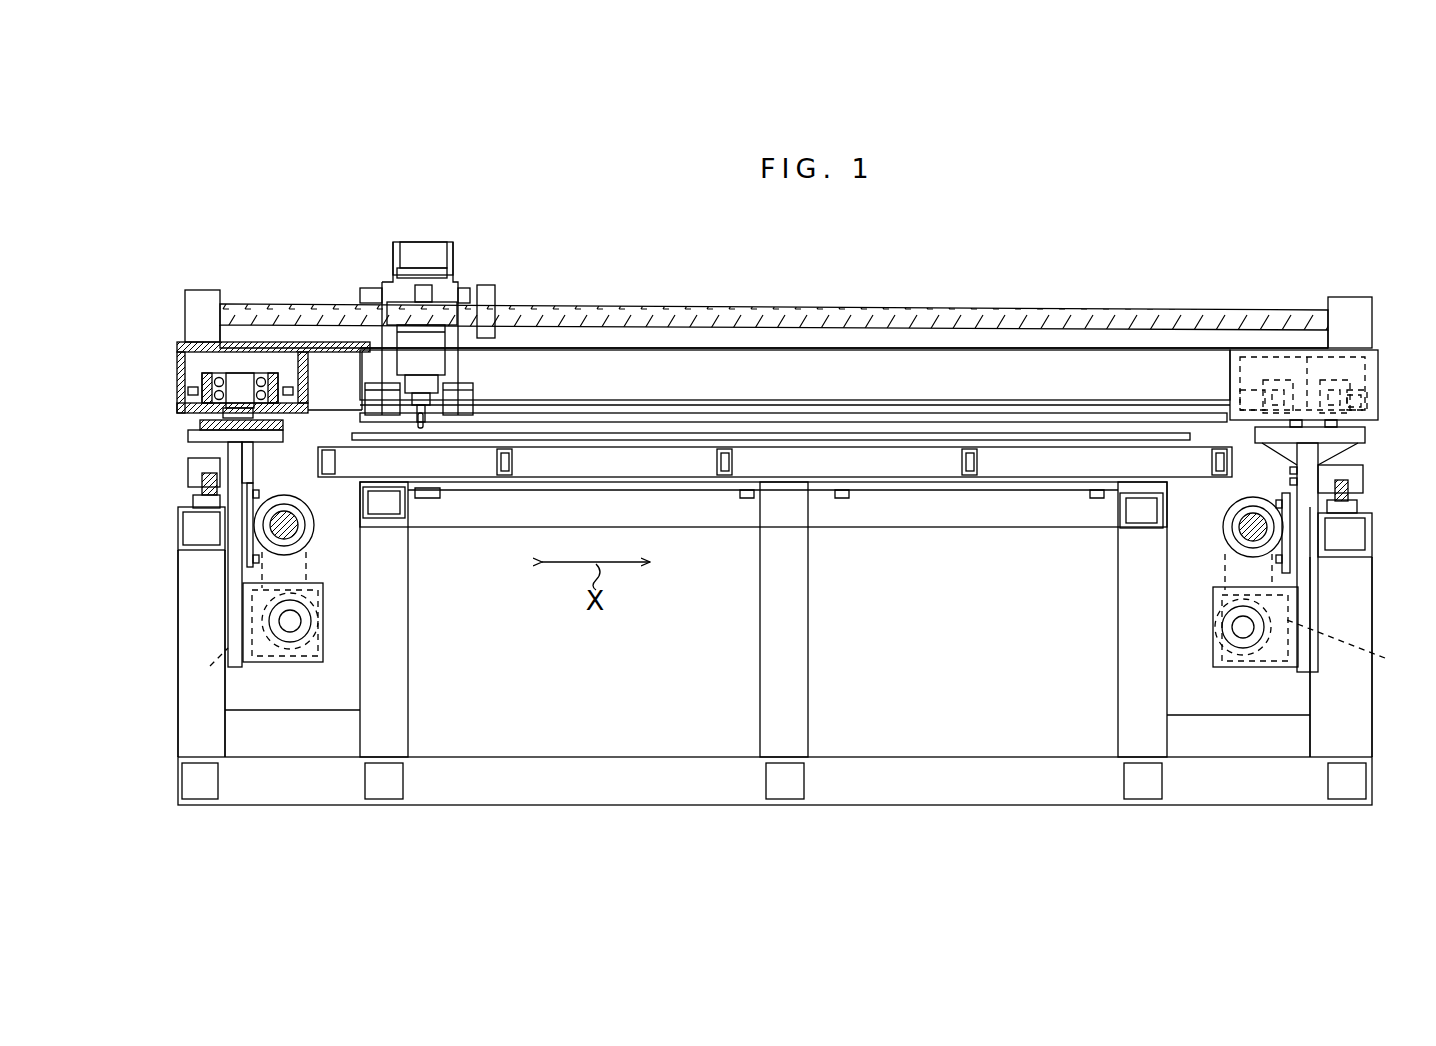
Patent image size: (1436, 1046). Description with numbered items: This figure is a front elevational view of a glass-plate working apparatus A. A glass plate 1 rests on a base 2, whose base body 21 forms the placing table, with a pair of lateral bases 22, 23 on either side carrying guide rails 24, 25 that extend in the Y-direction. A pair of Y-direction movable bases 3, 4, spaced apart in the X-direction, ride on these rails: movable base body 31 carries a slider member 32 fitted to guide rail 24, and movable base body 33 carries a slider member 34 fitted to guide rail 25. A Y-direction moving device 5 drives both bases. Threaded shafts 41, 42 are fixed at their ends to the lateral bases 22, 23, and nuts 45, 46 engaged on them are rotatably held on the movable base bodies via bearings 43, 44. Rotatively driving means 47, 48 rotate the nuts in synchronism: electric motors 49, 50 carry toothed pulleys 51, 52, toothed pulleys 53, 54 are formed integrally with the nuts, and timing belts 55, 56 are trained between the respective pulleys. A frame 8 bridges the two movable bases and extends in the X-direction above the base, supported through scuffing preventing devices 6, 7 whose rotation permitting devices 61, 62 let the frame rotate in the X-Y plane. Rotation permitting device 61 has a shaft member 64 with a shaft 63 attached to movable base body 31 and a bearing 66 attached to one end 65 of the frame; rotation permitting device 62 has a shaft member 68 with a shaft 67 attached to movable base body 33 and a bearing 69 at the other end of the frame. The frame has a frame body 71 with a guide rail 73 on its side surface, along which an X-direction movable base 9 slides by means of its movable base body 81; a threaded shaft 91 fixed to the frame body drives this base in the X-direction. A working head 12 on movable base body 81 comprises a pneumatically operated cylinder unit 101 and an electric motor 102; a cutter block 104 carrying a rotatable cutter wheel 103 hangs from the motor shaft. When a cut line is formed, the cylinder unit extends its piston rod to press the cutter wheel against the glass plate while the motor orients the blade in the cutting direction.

The glass plate 1 is at (925, 447).
The base 2 is at (800, 577).
The Y-direction movable base 3 is at (228, 598).
The Y-direction movable base 4 is at (1318, 620).
The Y-direction moving device 5 is at (300, 666).
The scuffing preventing device 6 is at (247, 375).
The scuffing preventing device 7 is at (1332, 380).
The frame 8 is at (993, 345).
The X-direction movable base 9 is at (460, 277).
The working head 12 is at (448, 358).
The base body 21 is at (1018, 468).
The lateral base 22 is at (182, 525).
The lateral base 23 is at (1372, 535).
The guide rail 24 is at (205, 482).
The guide rail 25 is at (1350, 488).
The movable base body 31 is at (238, 561).
The slider member 32 is at (195, 428).
The movable base body 33 is at (1320, 580).
The slider member 34 is at (1362, 475).
The threaded shaft 41 is at (297, 527).
The threaded shaft 42 is at (1245, 531).
The bearing 43 is at (306, 505).
The bearing 44 is at (1258, 515).
The nut 45 is at (276, 493).
The nut 46 is at (1228, 514).
The rotatively driving means 47 is at (326, 637).
The rotatively driving means 48 is at (1215, 650).
The electric motor 49 is at (262, 652).
The electric motor 50 is at (1282, 655).
The toothed pulley 51 is at (303, 621).
The toothed pulley 52 is at (1240, 627).
The toothed pulley 53 is at (294, 540).
The toothed pulley 54 is at (1232, 525).
The timing belt 55 is at (204, 672).
The timing belt 56 is at (1353, 647).
The rotation permitting device 61 is at (197, 358).
The rotation permitting device 62 is at (1355, 392).
The shaft 63 is at (232, 378).
The shaft member 64 is at (262, 413).
The one end of the frame 65 is at (268, 378).
The bearing 66 is at (330, 348).
The shaft 67 is at (1312, 375).
The shaft member 68 is at (1375, 352).
The bearing 69 is at (1270, 375).
The frame body 71 is at (838, 358).
The guide rail 73 is at (628, 408).
The movable base body 81 is at (458, 322).
The threaded shaft 91 is at (1080, 310).
The pneumatically operated cylinder unit 101 is at (428, 262).
The electric motor 102 is at (432, 395).
The cutter wheel 103 is at (427, 370).
The cutter block 104 is at (418, 422).
The glass-plate working apparatus A is at (1255, 232).